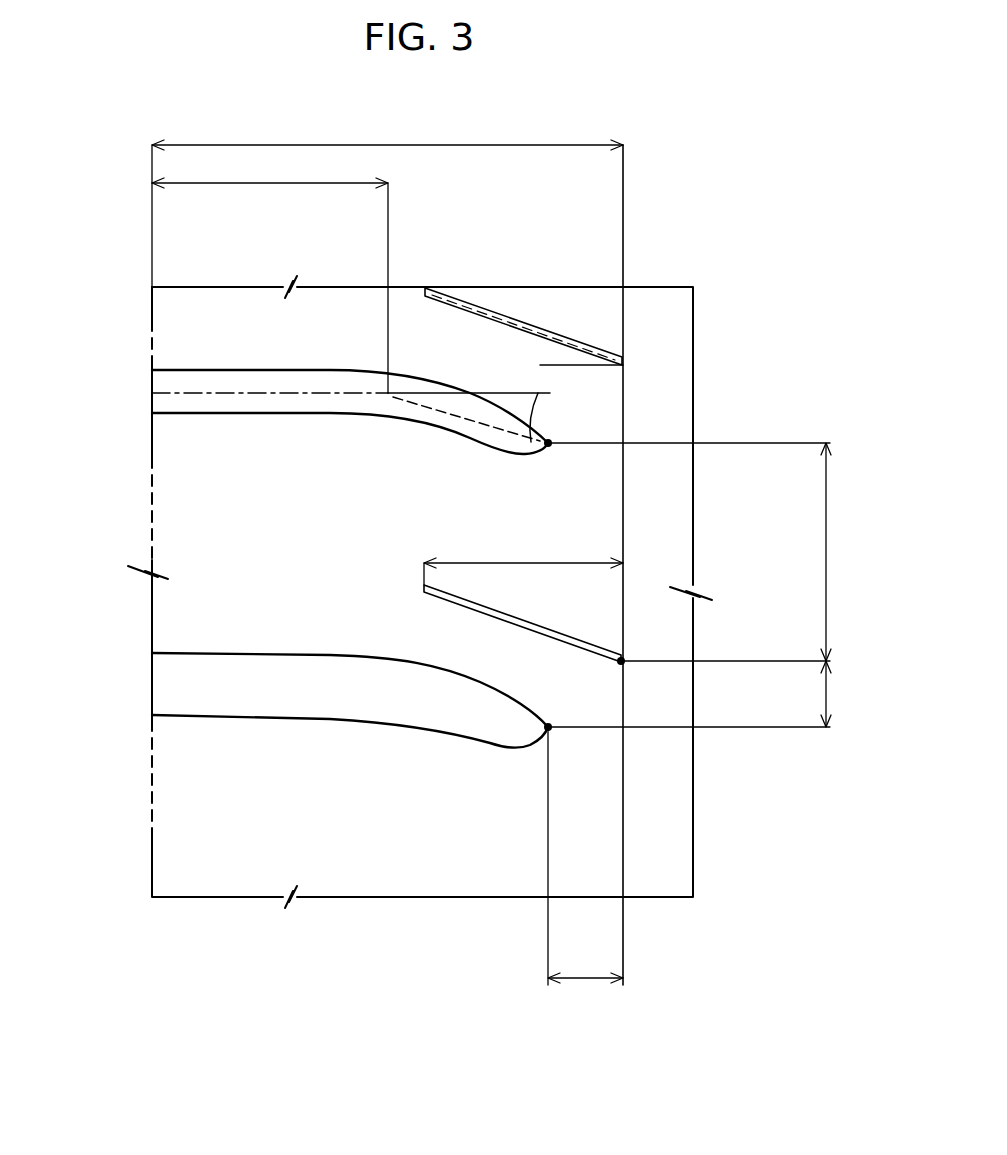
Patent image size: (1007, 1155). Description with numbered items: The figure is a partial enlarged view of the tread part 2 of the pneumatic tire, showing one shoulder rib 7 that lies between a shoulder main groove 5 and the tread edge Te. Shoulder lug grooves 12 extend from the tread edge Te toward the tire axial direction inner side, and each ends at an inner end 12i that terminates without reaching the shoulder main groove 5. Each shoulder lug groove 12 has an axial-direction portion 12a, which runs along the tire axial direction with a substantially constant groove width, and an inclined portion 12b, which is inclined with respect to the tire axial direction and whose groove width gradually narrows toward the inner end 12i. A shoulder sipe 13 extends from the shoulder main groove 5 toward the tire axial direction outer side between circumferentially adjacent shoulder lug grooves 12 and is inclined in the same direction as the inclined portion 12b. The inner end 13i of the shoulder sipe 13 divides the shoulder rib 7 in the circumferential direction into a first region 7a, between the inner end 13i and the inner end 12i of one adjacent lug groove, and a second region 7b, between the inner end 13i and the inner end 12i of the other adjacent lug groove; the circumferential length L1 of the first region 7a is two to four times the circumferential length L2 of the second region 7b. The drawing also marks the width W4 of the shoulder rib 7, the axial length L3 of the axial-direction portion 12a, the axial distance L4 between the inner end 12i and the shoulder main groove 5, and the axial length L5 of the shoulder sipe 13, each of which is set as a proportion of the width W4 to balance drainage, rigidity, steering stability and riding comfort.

The tread part 2 is at (727, 183).
The shoulder main groove 5 is at (667, 313).
The shoulder rib 7 is at (342, 810).
The first region 7a is at (585, 530).
The second region 7b is at (593, 693).
The shoulder lug groove 12 is at (237, 683).
The axial-direction portion 12a is at (236, 387).
The inclined portion 12b is at (428, 413).
The inner end of shoulder lug groove 12i is at (556, 440).
The shoulder sipe 13 is at (633, 350).
The inner end of shoulder sipe 13i is at (630, 656).
The tread edge Te is at (148, 480).
The width of shoulder rib W4 is at (387, 203).
The tire circumferential direction length of first region L1 is at (689, 552).
The tire circumferential direction length of second region L2 is at (689, 694).
The tire axial direction length of axial-direction portion L3 is at (270, 276).
The tire axial direction distance between inner end and shoulder main groove L4 is at (585, 856).
The tire axial direction length of shoulder sipe L5 is at (522, 557).